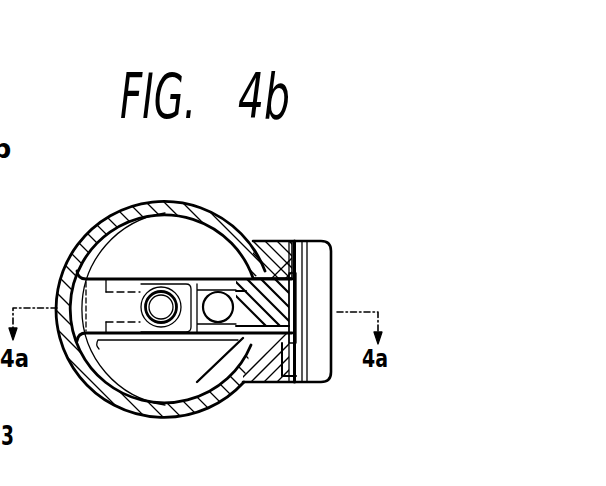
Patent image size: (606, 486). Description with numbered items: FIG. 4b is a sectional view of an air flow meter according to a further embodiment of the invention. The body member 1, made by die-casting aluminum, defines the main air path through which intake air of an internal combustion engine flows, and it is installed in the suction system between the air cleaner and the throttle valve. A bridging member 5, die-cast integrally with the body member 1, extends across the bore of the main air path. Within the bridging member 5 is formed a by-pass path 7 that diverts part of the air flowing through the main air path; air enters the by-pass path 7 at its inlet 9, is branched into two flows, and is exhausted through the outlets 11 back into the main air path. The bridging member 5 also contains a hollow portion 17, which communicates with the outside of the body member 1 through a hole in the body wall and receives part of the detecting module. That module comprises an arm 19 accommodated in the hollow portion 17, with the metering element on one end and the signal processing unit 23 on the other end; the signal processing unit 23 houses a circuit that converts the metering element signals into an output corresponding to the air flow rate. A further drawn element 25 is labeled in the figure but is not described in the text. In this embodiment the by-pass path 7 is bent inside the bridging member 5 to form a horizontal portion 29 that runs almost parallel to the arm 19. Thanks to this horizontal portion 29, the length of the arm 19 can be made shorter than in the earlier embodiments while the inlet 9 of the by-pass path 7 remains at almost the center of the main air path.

The body member 1 is at (159, 201).
The bridging member 5 is at (125, 278).
The by-pass path 7 is at (216, 303).
The inlet 9 is at (161, 300).
The outlets 11 is at (100, 373).
The hollow portion 17 is at (265, 263).
The arm 19 is at (281, 306).
The signal processing unit 23 is at (326, 382).
The plate 25 is at (292, 384).
The horizontal portion 29 is at (175, 337).